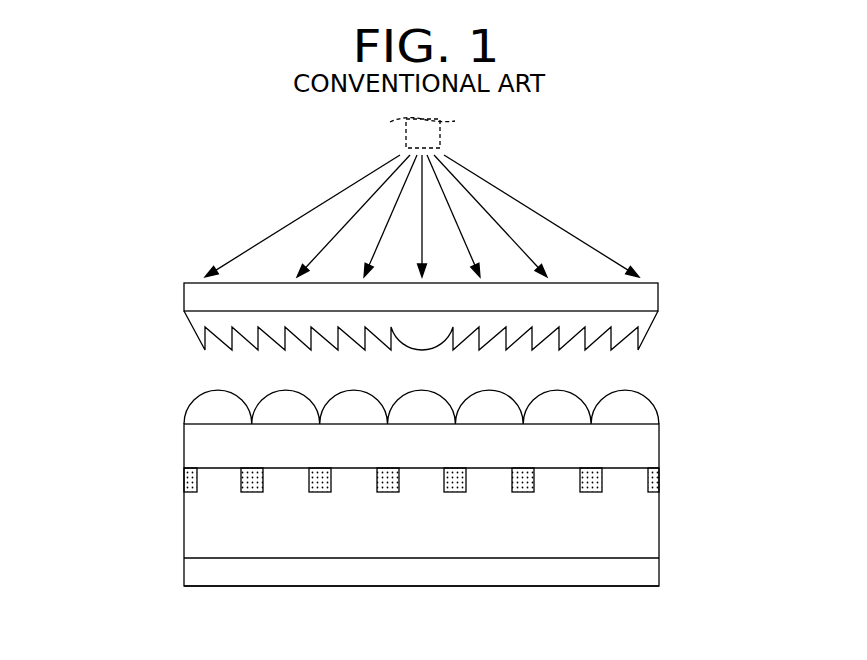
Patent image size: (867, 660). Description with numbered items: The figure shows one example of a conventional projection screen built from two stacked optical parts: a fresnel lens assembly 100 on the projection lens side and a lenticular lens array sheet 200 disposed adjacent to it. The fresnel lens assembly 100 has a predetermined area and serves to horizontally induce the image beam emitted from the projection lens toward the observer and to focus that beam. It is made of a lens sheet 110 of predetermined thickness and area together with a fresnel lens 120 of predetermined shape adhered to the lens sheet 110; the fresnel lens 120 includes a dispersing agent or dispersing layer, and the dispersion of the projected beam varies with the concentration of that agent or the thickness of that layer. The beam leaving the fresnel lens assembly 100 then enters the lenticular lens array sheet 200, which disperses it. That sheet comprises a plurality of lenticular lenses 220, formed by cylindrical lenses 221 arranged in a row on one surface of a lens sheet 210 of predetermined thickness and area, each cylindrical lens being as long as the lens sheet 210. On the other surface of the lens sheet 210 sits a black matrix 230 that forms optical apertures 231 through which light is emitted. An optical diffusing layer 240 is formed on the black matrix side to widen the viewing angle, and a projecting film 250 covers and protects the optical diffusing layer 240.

The fresnel lens assembly 100 is at (394, 316).
The lens sheet 110 is at (648, 300).
The fresnel lens 120 is at (643, 326).
The lenticular lens array sheet 200 is at (391, 500).
The lens sheet 210 is at (643, 452).
The lenticular lenses 220 is at (460, 398).
The cylindrical lenses 221 is at (643, 414).
The black matrix 230 is at (648, 481).
The aperture 231 is at (557, 482).
The optical diffusing layer 240 is at (643, 523).
The projecting film 250 is at (643, 572).